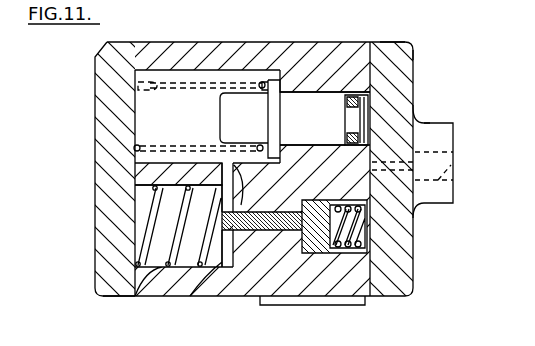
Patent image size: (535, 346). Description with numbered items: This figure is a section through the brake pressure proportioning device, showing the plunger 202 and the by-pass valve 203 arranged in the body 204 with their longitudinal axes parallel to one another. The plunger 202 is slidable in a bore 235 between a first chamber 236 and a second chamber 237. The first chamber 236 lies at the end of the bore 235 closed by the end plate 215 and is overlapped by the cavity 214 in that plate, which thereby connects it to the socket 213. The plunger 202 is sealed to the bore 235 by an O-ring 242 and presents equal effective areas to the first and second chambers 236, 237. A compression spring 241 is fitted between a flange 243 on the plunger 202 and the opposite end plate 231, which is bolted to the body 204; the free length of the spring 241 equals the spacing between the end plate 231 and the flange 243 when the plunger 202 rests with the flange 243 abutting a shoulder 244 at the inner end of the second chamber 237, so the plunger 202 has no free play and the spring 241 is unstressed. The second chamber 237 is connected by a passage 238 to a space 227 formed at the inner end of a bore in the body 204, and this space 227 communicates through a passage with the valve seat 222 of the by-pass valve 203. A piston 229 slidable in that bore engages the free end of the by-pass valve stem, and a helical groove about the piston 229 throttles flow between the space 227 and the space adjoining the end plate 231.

The plunger 202 is at (301, 93).
The by-pass valve 203 is at (293, 266).
The body 204 is at (207, 42).
The socket 213 is at (457, 163).
The cavity 214 is at (418, 205).
The end plate 215 is at (412, 252).
The valve seat 222 is at (312, 251).
The space 227 is at (188, 297).
The piston 229 is at (150, 291).
The end plate 231 is at (112, 171).
The bore 235 is at (383, 43).
The first chamber 236 is at (421, 107).
The second chamber 237 is at (157, 78).
The passage 238 is at (216, 296).
The compression spring 241 is at (179, 80).
The O-ring 242 is at (352, 94).
The flange 243 is at (271, 92).
The shoulder 244 is at (294, 106).